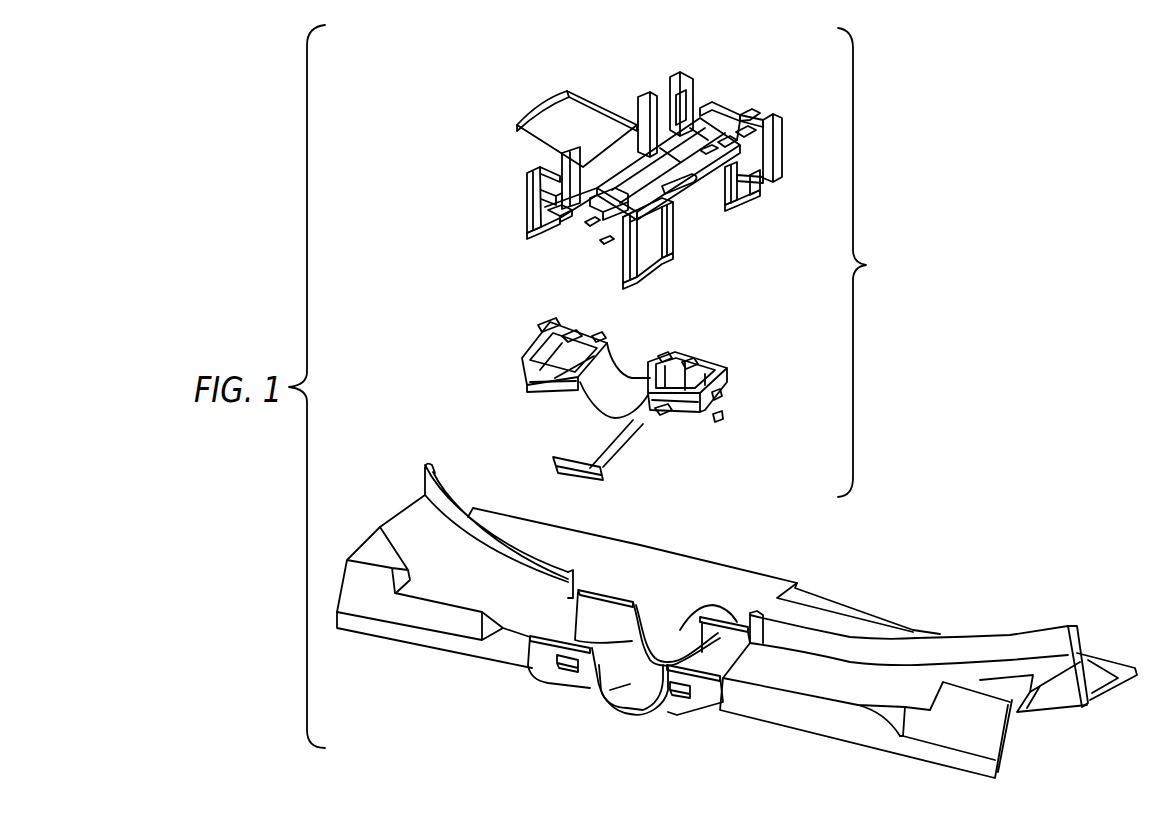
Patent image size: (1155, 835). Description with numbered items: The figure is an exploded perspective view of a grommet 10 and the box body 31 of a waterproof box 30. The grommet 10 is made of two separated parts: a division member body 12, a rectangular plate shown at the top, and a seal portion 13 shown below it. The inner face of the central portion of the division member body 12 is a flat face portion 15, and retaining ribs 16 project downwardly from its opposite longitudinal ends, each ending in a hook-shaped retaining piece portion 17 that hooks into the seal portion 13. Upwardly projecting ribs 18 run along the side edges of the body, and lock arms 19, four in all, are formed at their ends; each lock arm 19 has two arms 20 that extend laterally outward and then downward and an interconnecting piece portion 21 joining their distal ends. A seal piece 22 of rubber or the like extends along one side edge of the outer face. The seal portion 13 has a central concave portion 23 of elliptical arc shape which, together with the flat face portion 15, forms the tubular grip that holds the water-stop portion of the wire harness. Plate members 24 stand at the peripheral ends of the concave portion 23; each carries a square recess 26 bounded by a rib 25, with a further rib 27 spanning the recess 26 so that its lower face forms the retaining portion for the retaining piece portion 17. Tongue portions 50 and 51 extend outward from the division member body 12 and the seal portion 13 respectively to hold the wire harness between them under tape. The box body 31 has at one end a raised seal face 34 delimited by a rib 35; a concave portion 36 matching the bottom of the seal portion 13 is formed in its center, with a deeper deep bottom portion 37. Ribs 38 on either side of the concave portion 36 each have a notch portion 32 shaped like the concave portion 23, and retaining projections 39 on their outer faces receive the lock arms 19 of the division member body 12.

The grommet 10 is at (865, 262).
The division member body 12 is at (786, 121).
The seal portion 13 is at (741, 364).
The flat face portion 15 is at (677, 193).
The retaining ribs 16 is at (723, 148).
The retaining piece portions 17 is at (705, 152).
The ribs 18 is at (705, 120).
The lock arms 19 is at (519, 184).
The arms 20 is at (782, 143).
The interconnecting piece portion 21 is at (755, 190).
The seal piece 22 is at (743, 138).
The concave portion 23 is at (628, 378).
The plate members 24 is at (537, 385).
The rib 25 is at (598, 335).
The recess 26 is at (568, 335).
The rib 27 is at (542, 328).
The waterproof box 30 is at (771, 727).
The box body 31 is at (715, 417).
The notch portions 32 is at (637, 613).
The seal face 34 is at (818, 665).
The rib 35 is at (990, 628).
The concave portion 36 is at (626, 689).
The deep bottom portion 37 is at (667, 657).
The ribs 38 is at (592, 587).
The retaining projections 39 is at (567, 673).
The tongue portion 50 is at (587, 110).
The tongue portion 51 is at (583, 480).